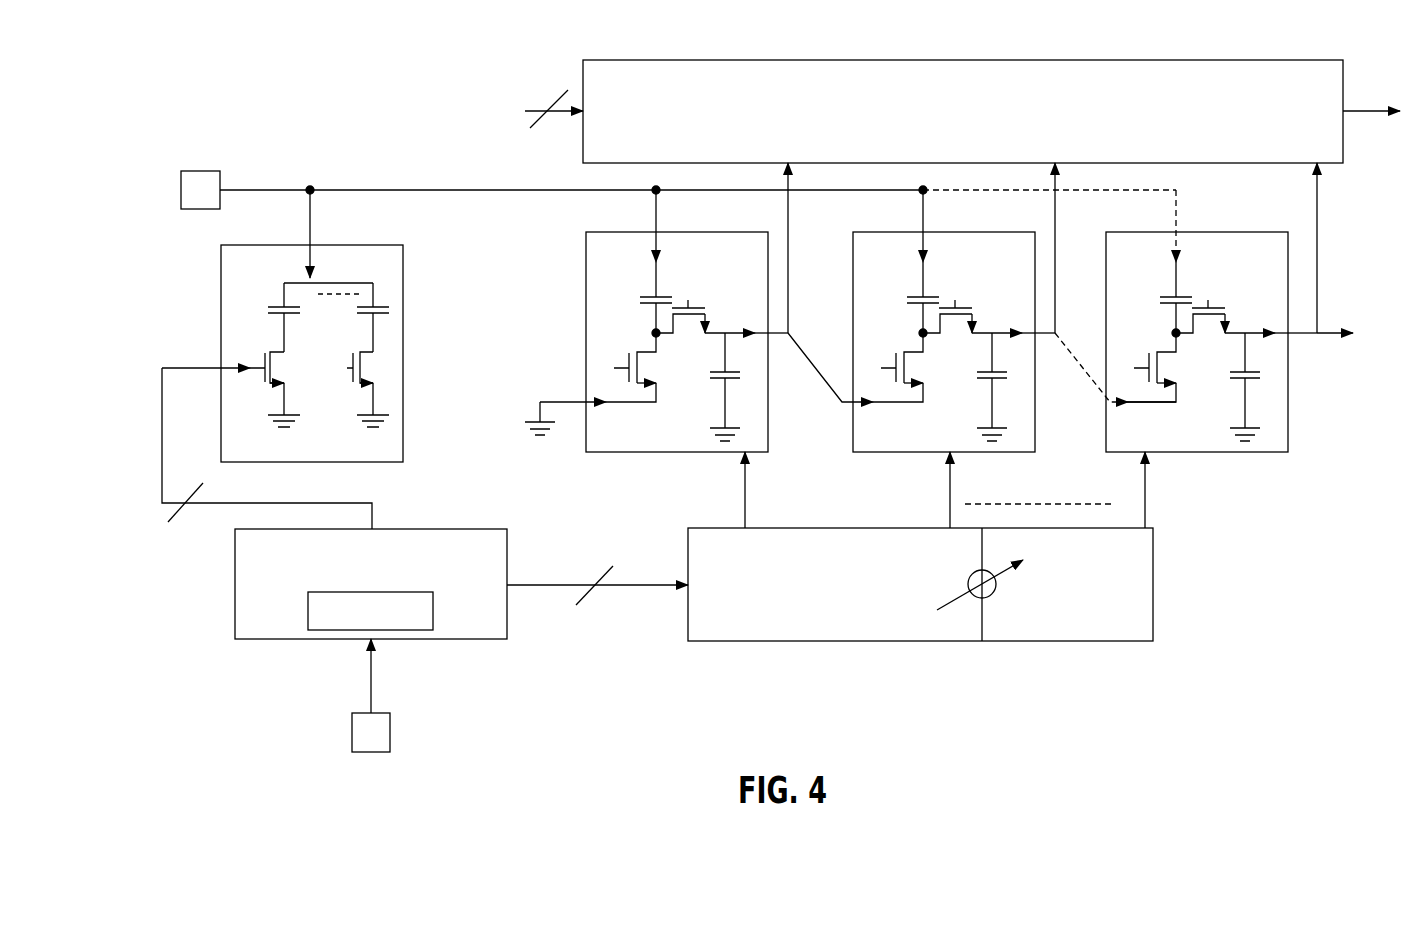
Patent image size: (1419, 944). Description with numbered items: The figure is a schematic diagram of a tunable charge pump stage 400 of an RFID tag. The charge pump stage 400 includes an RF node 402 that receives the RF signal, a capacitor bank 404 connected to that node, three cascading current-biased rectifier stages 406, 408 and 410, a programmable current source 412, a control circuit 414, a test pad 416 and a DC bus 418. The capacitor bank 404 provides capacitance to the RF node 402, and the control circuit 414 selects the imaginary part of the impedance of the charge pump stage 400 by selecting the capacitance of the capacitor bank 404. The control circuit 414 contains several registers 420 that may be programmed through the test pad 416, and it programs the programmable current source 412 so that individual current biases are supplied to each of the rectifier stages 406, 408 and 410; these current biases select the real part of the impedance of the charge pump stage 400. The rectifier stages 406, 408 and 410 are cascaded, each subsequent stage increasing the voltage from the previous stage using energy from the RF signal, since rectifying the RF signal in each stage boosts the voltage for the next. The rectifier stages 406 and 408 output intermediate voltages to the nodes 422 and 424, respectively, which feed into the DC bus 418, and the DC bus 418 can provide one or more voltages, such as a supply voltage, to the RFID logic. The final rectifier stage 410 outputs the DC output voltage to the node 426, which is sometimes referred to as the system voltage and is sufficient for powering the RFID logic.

The tunable charge pump stage 400 is at (265, 80).
The RF node 402 is at (181, 190).
The capacitor bank 404 is at (295, 245).
The current-biased rectifier stage 406 is at (620, 232).
The current-biased rectifier stage 408 is at (892, 232).
The current-biased rectifier stage 410 is at (1148, 232).
The programmable current source 412 is at (920, 641).
The control circuit 414 is at (235, 585).
The test pad 416 is at (352, 732).
The DC bus 418 is at (958, 60).
The registers 420 is at (433, 610).
The node 422 is at (785, 228).
The node 424 is at (1052, 228).
The node 426 is at (1315, 228).